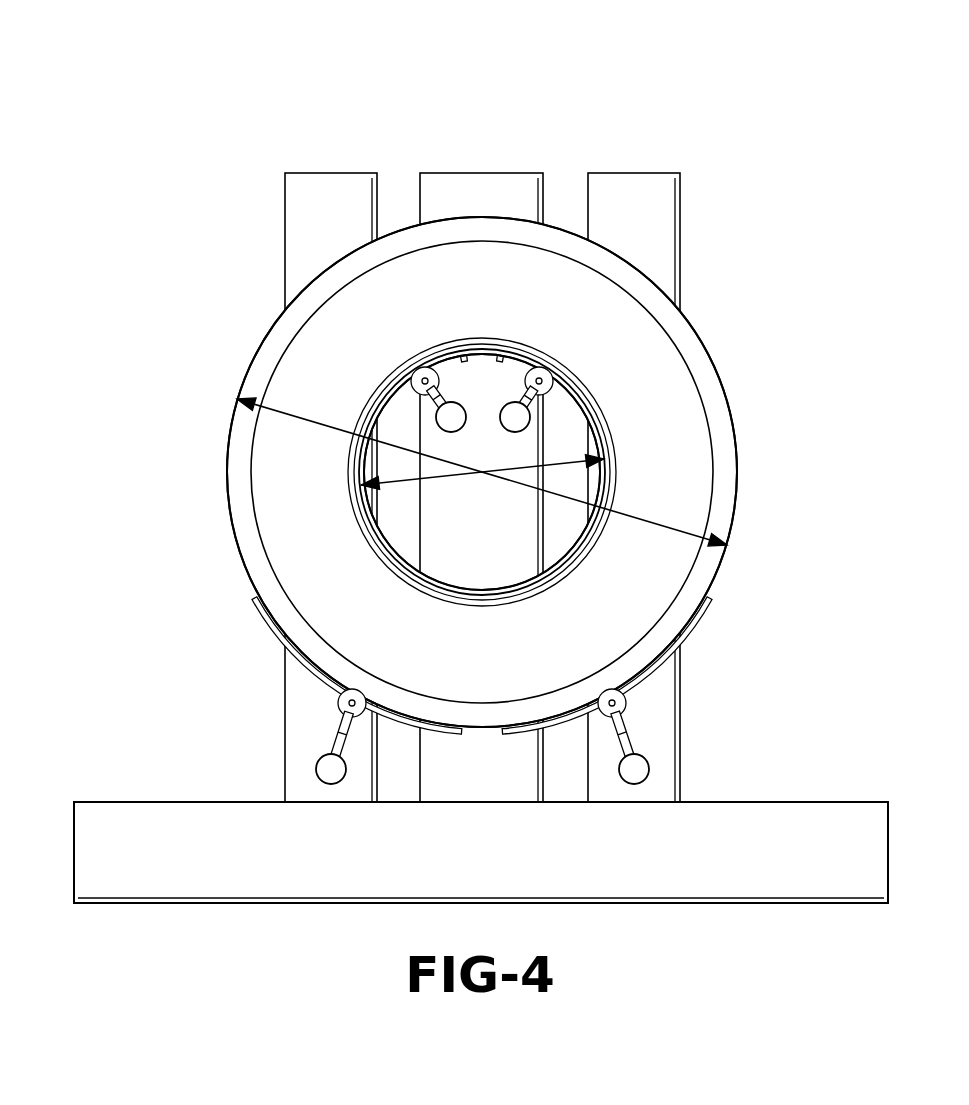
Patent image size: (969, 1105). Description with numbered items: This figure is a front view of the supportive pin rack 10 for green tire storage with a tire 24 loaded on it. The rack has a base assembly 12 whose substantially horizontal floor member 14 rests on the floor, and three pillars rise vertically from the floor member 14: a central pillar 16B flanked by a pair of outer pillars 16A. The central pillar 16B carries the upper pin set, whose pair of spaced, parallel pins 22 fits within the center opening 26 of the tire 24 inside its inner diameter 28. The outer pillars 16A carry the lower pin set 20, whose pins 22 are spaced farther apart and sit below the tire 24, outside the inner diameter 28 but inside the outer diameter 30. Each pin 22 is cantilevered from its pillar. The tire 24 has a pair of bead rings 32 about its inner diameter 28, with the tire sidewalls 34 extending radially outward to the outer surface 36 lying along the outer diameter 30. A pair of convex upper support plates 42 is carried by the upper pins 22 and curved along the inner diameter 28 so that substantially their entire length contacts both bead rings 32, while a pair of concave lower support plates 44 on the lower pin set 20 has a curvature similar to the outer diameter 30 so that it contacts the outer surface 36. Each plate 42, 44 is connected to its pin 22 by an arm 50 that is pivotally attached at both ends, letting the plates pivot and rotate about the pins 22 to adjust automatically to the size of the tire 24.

The supportive pin rack 10 is at (660, 72).
The base assembly 12 is at (338, 903).
The floor member 14 is at (207, 878).
The outer pillars 16A is at (326, 194).
The central pillar 16B is at (486, 194).
The lower pin set 20 is at (307, 755).
The pin 22 is at (443, 416).
The tire 24 is at (226, 433).
The center opening 26 is at (480, 578).
The inner diameter 28 is at (440, 482).
The outer diameter 30 is at (658, 523).
The bead rings 32 is at (453, 593).
The tire sidewalls 34 is at (302, 538).
The outer surface 36 is at (228, 507).
The upper support plates 42 is at (443, 415).
The lower support plates 44 is at (270, 625).
The arm 50 is at (438, 394).